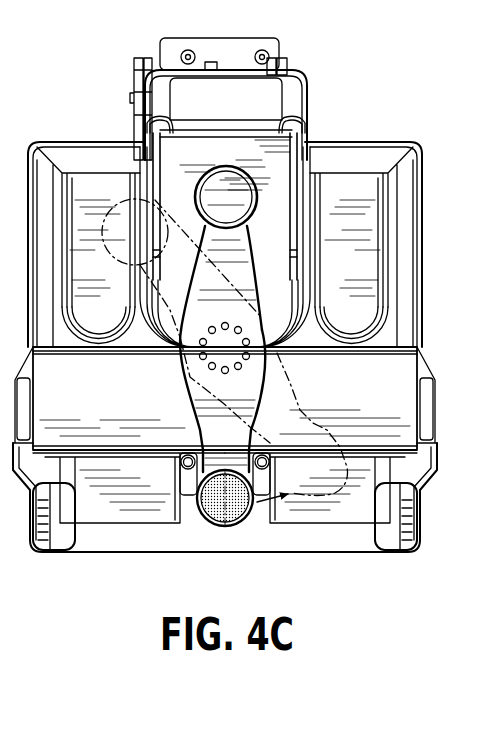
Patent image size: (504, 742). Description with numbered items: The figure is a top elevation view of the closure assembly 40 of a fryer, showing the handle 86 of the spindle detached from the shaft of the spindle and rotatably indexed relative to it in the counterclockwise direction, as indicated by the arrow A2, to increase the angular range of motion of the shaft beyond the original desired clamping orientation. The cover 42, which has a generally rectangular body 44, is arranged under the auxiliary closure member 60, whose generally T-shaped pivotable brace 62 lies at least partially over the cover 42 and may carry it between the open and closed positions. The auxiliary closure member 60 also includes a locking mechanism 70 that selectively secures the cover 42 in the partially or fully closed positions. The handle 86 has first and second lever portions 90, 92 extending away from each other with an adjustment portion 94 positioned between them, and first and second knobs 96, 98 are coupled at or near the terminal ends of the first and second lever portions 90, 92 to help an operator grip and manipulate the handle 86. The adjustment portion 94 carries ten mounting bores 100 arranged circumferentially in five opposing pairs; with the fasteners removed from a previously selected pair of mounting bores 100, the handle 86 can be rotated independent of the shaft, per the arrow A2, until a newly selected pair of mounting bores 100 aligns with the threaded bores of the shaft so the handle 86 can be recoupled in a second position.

The closure assembly 40 is at (63, 47).
The cover 42 is at (82, 140).
The body 44 is at (112, 282).
The auxiliary closure member 60 is at (310, 118).
The pivotable brace 62 is at (82, 411).
The locking mechanism 70 is at (50, 551).
The handle 86 is at (266, 370).
The first lever portion 90 is at (250, 256).
The second lever portion 92 is at (253, 437).
The adjustment portion 94 is at (183, 343).
The first knob 96 is at (258, 196).
The second knob 98 is at (227, 528).
The mounting bores 100 is at (203, 343).
The arrow A2 is at (274, 540).